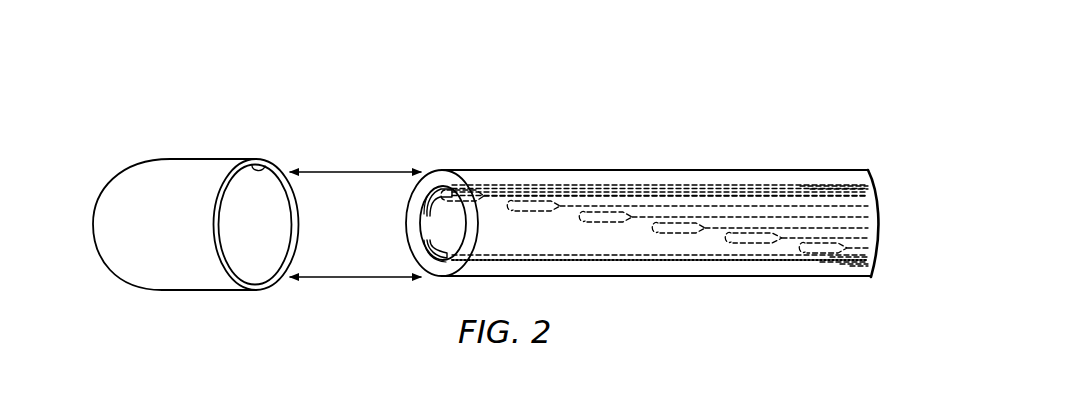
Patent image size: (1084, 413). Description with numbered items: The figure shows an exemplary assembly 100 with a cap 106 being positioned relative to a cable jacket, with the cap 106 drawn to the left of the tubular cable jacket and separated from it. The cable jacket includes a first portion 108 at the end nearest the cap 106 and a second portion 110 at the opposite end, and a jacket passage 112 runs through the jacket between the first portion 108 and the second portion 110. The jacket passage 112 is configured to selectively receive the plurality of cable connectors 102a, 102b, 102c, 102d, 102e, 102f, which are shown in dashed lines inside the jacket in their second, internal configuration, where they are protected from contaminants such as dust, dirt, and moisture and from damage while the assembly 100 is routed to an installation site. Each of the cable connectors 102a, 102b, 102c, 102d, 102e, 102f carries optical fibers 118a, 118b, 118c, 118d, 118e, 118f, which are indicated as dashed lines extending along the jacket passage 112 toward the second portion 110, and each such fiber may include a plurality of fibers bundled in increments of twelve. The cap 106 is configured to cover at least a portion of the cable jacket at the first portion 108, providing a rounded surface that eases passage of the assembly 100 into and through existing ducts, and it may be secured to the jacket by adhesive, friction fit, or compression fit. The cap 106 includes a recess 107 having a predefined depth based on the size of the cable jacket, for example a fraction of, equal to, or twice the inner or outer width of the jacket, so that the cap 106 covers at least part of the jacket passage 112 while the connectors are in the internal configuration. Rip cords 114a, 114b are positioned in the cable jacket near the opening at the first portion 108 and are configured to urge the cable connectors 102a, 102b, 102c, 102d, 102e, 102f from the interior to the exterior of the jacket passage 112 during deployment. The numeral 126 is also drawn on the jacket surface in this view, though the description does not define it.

The assembly 100 is at (717, 97).
The cable connector 102a is at (472, 188).
The cable connector 102b is at (533, 198).
The cable connector 102c is at (601, 210).
The cable connector 102d is at (674, 220).
The cable connector 102e is at (748, 230).
The cable connector 102f is at (820, 240).
The cap 106 is at (118, 171).
The recess 107 is at (262, 166).
The first portion 108 is at (416, 200).
The second portion 110 is at (871, 172).
The jacket passage 112 is at (712, 264).
The rip cord 114a is at (422, 222).
The rip cord 114b is at (426, 252).
The optical fiber 118a is at (825, 184).
The optical fiber 118b is at (838, 186).
The optical fiber 118c is at (833, 263).
The optical fiber 118d is at (847, 258).
The optical fiber 118e is at (853, 265).
The optical fiber 118f is at (863, 266).
The outer surface 126 is at (518, 168).